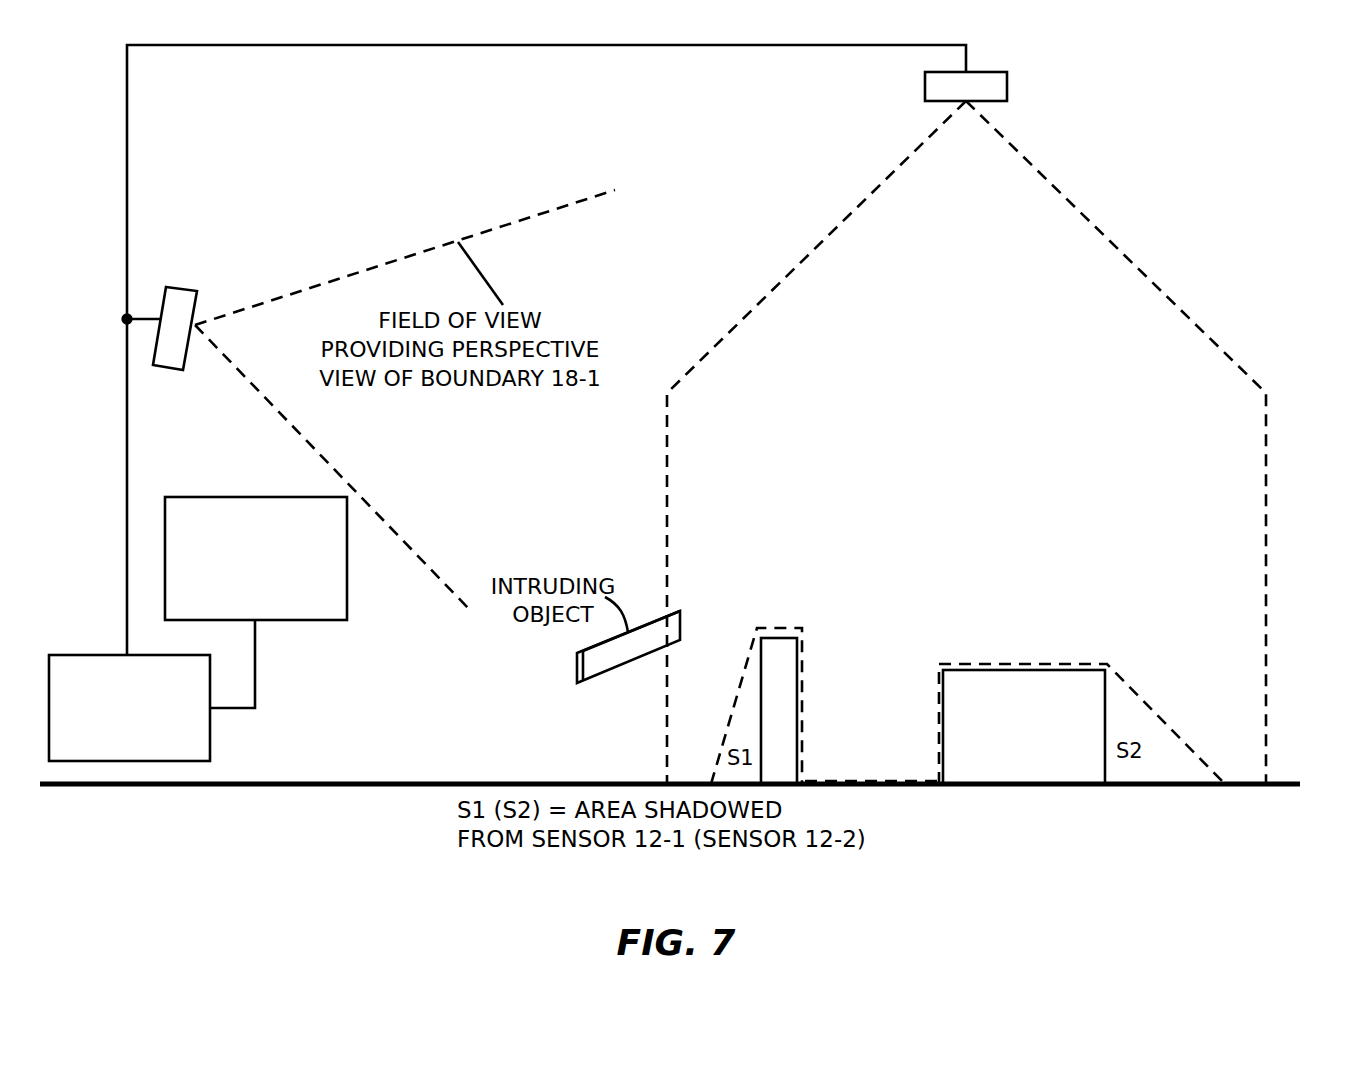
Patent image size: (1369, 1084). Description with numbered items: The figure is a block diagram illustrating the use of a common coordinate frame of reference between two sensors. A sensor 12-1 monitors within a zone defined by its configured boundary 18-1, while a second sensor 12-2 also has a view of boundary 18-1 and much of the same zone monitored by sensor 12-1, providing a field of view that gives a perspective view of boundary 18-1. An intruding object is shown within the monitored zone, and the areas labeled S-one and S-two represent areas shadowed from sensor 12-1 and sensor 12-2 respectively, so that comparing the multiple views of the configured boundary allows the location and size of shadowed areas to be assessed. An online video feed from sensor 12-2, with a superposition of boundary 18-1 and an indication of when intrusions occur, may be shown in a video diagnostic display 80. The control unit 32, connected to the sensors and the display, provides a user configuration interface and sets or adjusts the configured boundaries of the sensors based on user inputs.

The sensor 12-1 is at (966, 86).
The sensor 12-2 is at (183, 290).
The configured boundary 18-1 is at (1090, 218).
The video diagnostic display 80 is at (243, 614).
The control unit 32 is at (117, 749).